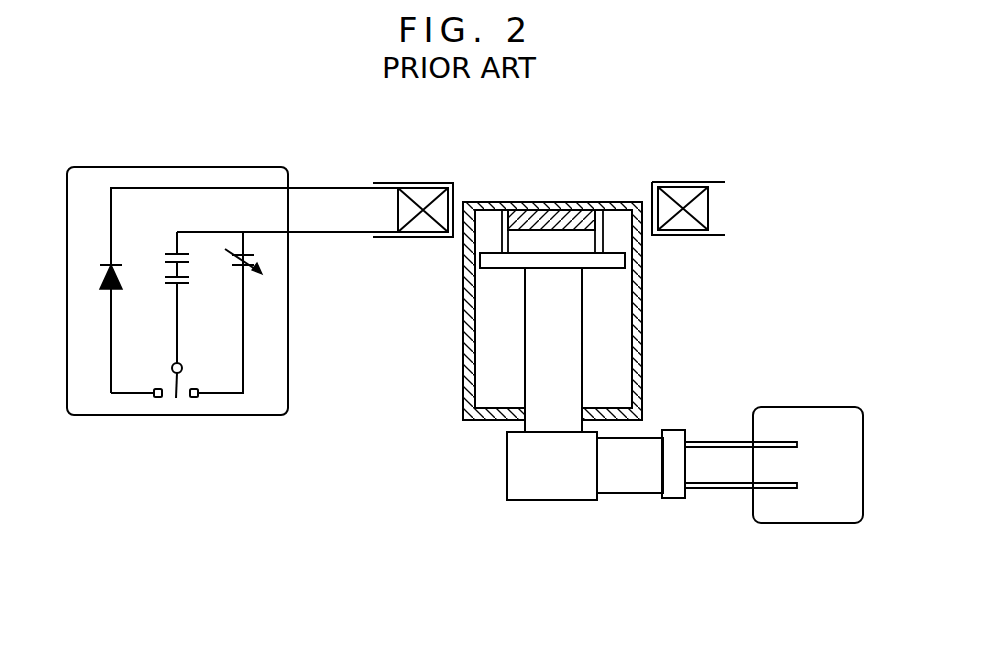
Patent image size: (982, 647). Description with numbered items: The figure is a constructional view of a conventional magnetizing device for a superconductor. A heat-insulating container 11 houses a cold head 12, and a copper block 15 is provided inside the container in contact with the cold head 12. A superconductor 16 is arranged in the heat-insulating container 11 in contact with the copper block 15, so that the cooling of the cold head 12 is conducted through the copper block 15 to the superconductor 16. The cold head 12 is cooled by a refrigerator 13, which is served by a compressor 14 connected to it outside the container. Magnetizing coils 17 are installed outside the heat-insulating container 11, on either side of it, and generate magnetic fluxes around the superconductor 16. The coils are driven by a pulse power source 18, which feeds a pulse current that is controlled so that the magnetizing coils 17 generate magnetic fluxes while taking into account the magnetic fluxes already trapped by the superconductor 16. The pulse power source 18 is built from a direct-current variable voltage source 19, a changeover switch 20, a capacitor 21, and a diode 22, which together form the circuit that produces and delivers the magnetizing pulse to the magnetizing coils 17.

The heat-insulating container 11 is at (642, 337).
The cold head 12 is at (480, 262).
The refrigerator 13 is at (647, 428).
The compressor 14 is at (843, 408).
The copper block 15 is at (584, 243).
The superconductor 16 is at (552, 210).
The magnetizing coils 17 is at (422, 183).
The pulse power source 18 is at (264, 165).
The direct-current variable voltage source 19 is at (259, 257).
The changeover switch 20 is at (174, 400).
The capacitor 21 is at (188, 268).
The diode 22 is at (92, 278).